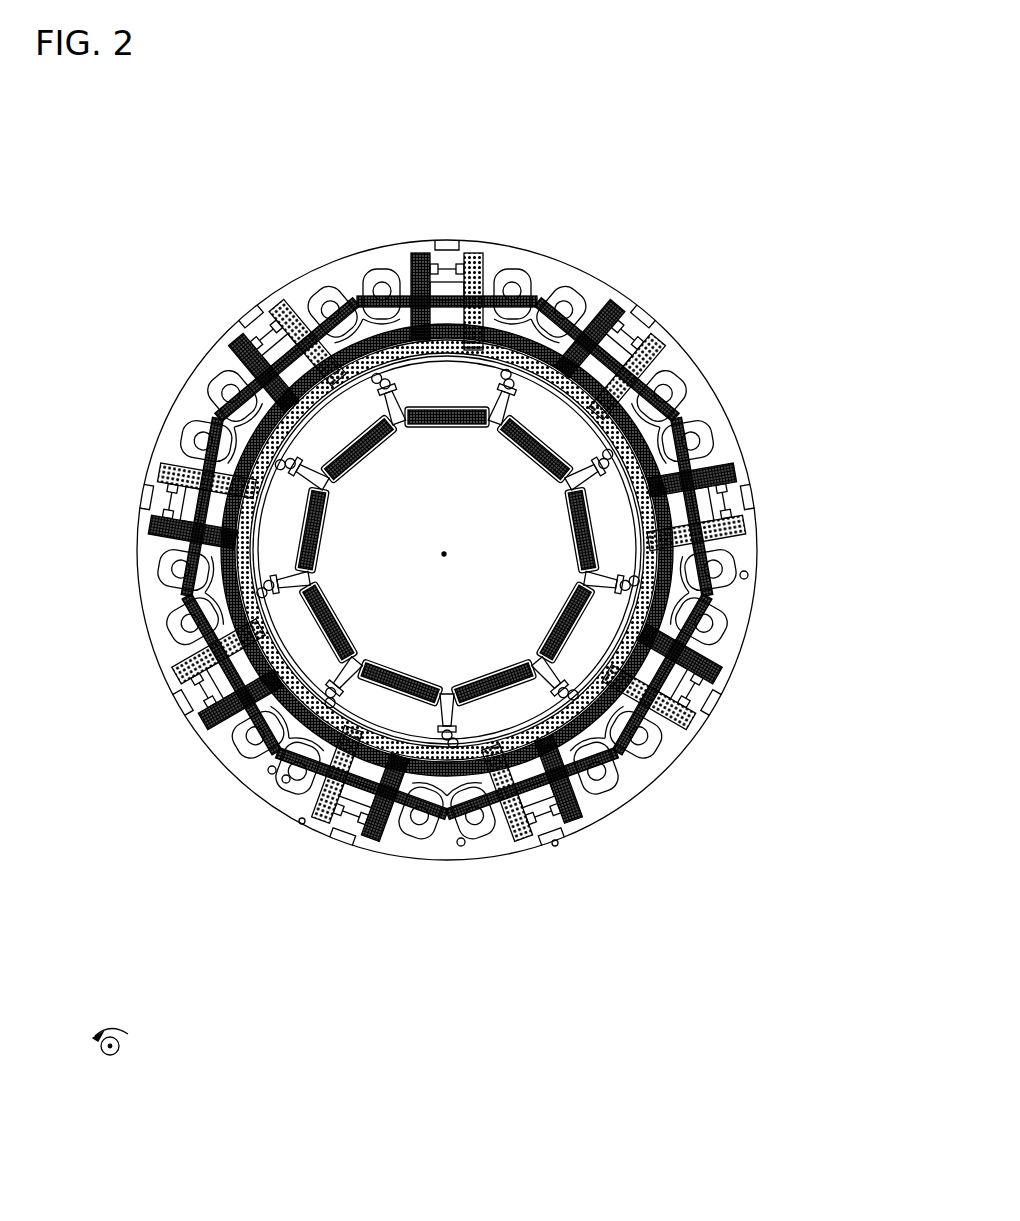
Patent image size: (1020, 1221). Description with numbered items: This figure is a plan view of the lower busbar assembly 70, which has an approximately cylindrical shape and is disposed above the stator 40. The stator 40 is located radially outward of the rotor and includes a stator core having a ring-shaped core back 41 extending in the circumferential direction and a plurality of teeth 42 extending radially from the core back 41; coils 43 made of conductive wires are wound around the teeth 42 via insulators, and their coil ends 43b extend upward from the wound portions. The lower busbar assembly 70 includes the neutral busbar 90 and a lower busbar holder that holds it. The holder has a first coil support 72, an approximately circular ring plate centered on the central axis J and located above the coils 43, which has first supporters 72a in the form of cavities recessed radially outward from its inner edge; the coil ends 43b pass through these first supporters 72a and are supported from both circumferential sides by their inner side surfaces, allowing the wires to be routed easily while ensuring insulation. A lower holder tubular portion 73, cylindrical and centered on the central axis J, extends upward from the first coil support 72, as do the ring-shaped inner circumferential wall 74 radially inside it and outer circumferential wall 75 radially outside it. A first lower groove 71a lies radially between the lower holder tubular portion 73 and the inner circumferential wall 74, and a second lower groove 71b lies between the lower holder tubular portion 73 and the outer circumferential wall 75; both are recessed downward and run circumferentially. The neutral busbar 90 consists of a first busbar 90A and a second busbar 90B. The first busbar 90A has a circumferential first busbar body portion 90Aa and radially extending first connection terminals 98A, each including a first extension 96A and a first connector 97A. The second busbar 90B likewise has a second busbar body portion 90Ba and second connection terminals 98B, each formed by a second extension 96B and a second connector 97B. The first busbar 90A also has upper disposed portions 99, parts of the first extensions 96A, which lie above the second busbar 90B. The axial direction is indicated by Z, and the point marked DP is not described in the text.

The stator 40 is at (612, 838).
The core back 41 is at (582, 270).
The teeth 42 is at (414, 440).
The coils 43 is at (350, 628).
The coil ends 43b is at (562, 692).
The lower busbar assembly 70 is at (687, 183).
The first lower groove 71a is at (320, 293).
The second lower groove 71b is at (650, 778).
The first coil support 72 is at (370, 337).
The first supporters 72a is at (405, 432).
The lower holder tubular portion 73 is at (348, 330).
The inner circumferential wall 74 is at (403, 377).
The outer circumferential wall 75 is at (748, 607).
The neutral busbar 90 is at (545, 842).
The first busbar 90A is at (330, 800).
The second busbar 90B is at (498, 866).
The first busbar body portion 90Aa is at (270, 772).
The second busbar body portion 90Ba is at (748, 575).
The first extension 96A is at (374, 848).
The second extension 96B is at (566, 830).
The first connector 97A is at (328, 832).
The second connector 97B is at (516, 845).
The first connection terminals 98A is at (370, 937).
The second connection terminals 98B is at (476, 989).
The upper disposed portions 99 is at (283, 782).
The dead point DP is at (300, 824).
The central axis J is at (444, 552).
The axial direction Z is at (101, 1055).